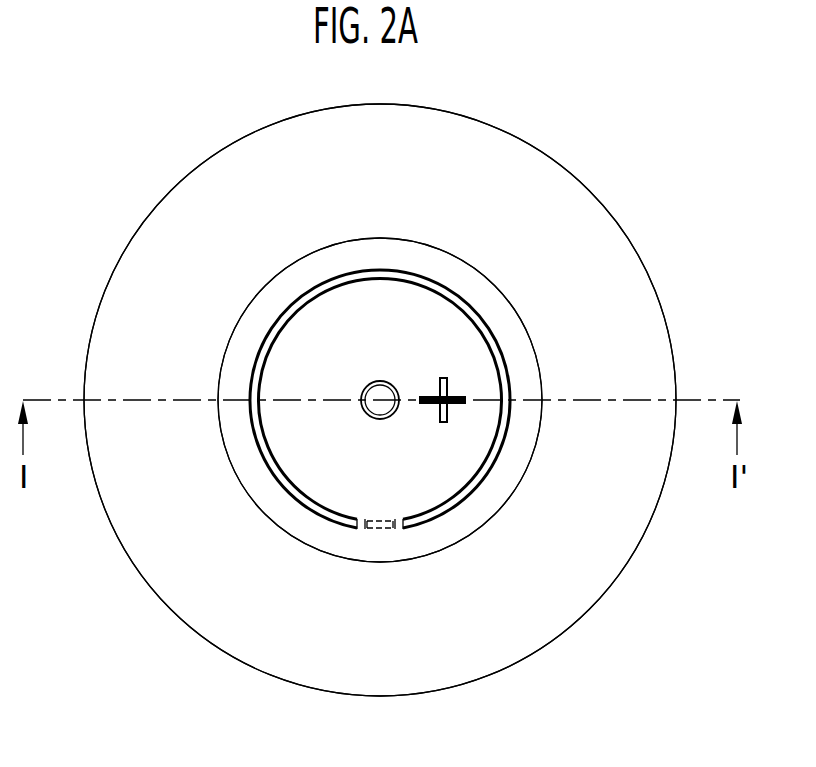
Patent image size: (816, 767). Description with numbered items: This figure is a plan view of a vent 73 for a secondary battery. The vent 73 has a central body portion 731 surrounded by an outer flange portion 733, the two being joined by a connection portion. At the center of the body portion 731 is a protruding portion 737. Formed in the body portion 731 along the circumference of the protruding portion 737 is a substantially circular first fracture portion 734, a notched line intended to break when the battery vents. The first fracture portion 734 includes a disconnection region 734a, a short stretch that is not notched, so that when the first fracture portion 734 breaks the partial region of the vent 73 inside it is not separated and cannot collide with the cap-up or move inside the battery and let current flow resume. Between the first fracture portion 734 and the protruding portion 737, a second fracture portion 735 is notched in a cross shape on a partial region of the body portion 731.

The vent 73 is at (617, 124).
The body portion 731 is at (262, 494).
The flange portion 733 is at (589, 206).
The first fracture portion 734 is at (513, 420).
The disconnection region 734a is at (380, 533).
The second fracture portion 735 is at (447, 382).
The protruding portion 737 is at (373, 392).